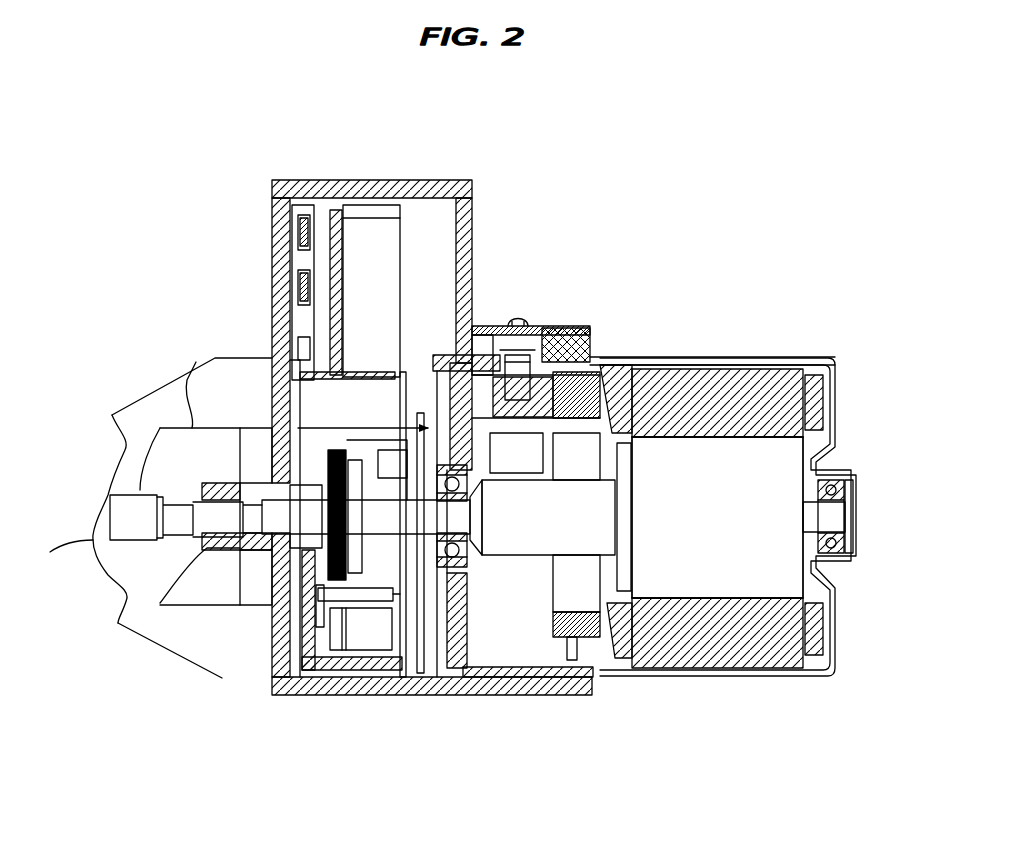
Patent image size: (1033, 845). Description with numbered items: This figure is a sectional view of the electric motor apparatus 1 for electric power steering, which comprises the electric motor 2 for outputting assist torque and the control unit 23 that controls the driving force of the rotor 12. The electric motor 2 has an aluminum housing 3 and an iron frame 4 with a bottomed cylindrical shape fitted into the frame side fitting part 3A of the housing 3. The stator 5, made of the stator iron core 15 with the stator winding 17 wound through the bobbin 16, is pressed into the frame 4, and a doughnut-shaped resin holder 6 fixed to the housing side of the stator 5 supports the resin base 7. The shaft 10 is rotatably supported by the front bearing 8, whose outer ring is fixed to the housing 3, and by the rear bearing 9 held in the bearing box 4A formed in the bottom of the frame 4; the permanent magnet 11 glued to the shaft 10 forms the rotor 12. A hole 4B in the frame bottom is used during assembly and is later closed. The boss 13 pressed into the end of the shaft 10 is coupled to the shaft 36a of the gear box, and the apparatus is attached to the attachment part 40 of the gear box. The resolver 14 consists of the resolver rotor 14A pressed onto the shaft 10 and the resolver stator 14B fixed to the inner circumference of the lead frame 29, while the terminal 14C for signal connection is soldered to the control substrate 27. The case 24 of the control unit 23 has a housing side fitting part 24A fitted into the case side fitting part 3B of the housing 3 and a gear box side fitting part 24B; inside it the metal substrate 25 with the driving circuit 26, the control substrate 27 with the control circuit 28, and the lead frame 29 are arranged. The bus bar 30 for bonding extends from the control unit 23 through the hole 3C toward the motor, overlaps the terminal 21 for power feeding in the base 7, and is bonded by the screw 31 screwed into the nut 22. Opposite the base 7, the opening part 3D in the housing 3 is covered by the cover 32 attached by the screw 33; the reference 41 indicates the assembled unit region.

The electric motor apparatus for electric power steering 1 is at (712, 354).
The electric motor 2 is at (765, 358).
The housing 3 is at (468, 184).
The frame side fitting part 3A is at (618, 358).
The case side fitting part 3B is at (442, 697).
The hole 3C is at (400, 400).
The opening part 3D is at (547, 413).
The frame 4 is at (830, 360).
The bearing box 4A is at (850, 480).
The hole 4B is at (858, 530).
The stator 5 is at (760, 662).
The holder 6 is at (625, 600).
The base 7 is at (597, 417).
The front bearing 8 is at (505, 620).
The rear bearing 9 is at (840, 552).
The shaft 10 is at (525, 537).
The permanent magnet 11 is at (775, 582).
The rotor 12 is at (760, 580).
The boss 13 is at (170, 585).
The resolver 14 is at (328, 470).
The resolver rotor 14A is at (116, 527).
The resolver stator 14B is at (345, 425).
The terminal for signal connection 14C is at (325, 415).
The stator iron core 15 is at (707, 648).
The bobbin 16 is at (822, 372).
The stator winding 17 is at (825, 395).
The terminal for power feeding 21 is at (320, 392).
The nut 22 is at (560, 340).
The control unit 23 is at (300, 704).
The case 24 is at (330, 697).
The housing side fitting part 24A is at (400, 662).
The gear box side fitting part 24B is at (252, 605).
The metal substrate 25 is at (292, 242).
The driving circuit 26 is at (300, 220).
The control substrate 27 is at (440, 685).
The control circuit 28 is at (455, 577).
The lead frame 29 is at (334, 208).
The bus bar for bonding 30 is at (416, 375).
The screw 31 is at (520, 355).
The cover 32 is at (536, 325).
The screw 33 is at (515, 318).
The shaft of the gear box 36a is at (113, 528).
The attachment part 40 is at (245, 650).
The motor unit 41 is at (670, 190).